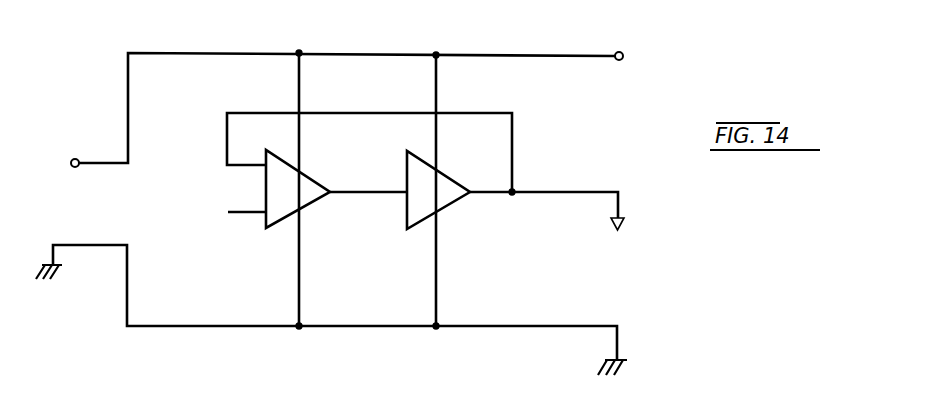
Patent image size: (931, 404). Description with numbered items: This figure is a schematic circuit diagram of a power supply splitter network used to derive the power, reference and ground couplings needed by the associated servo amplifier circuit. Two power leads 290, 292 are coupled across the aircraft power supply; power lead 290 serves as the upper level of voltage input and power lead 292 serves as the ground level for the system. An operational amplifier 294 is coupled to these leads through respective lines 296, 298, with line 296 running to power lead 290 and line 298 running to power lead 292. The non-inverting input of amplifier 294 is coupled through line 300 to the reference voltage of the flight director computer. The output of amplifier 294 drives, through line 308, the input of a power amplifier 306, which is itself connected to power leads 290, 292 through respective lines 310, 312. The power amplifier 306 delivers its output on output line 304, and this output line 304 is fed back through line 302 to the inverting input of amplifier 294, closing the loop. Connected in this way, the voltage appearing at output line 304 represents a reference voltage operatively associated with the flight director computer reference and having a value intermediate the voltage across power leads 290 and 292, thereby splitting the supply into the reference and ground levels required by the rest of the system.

The power lead 290 is at (438, 55).
The power lead 292 is at (223, 324).
The operational amplifier 294 is at (315, 173).
The line 296 is at (300, 93).
The line 298 is at (299, 291).
The line 300 is at (248, 212).
The line 302 is at (243, 112).
The output line 304 is at (523, 192).
The power amplifier 306 is at (447, 175).
The line 308 is at (371, 195).
The line 310 is at (437, 92).
The line 312 is at (437, 292).